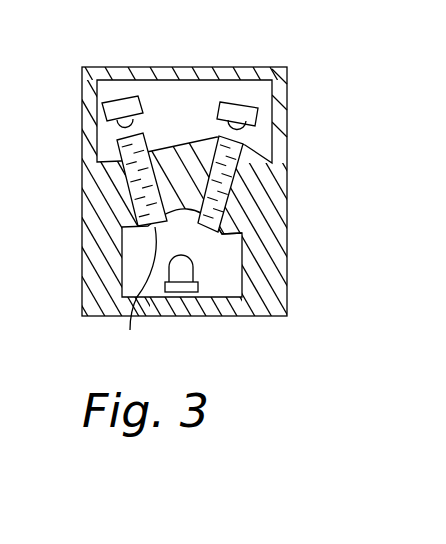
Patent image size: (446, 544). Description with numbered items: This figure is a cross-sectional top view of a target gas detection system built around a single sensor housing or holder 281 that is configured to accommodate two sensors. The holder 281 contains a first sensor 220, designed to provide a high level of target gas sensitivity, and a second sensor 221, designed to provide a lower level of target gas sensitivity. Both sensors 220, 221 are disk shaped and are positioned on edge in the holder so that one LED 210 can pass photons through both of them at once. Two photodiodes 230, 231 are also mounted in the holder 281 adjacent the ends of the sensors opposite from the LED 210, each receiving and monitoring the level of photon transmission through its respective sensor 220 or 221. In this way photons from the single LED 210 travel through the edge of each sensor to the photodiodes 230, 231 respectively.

The sensor housing or holder 281 is at (288, 183).
The photodiode 230 is at (118, 99).
The photodiode 231 is at (241, 101).
The second sensor 221 is at (223, 235).
The first sensor 220 is at (137, 300).
The LED 210 is at (193, 264).